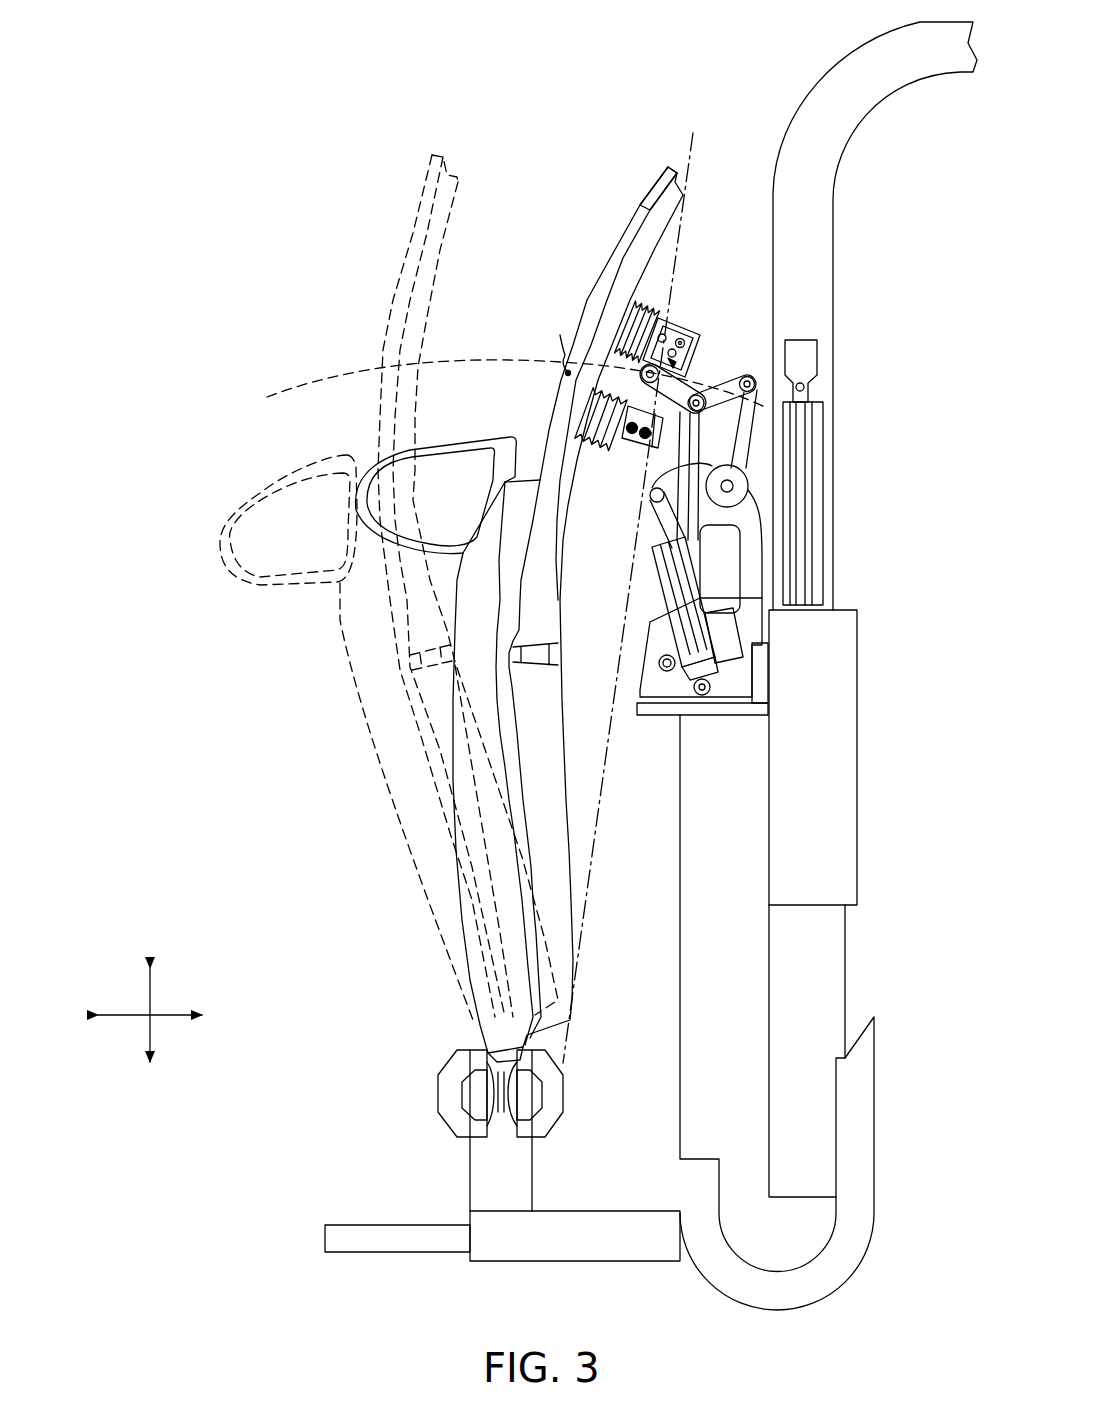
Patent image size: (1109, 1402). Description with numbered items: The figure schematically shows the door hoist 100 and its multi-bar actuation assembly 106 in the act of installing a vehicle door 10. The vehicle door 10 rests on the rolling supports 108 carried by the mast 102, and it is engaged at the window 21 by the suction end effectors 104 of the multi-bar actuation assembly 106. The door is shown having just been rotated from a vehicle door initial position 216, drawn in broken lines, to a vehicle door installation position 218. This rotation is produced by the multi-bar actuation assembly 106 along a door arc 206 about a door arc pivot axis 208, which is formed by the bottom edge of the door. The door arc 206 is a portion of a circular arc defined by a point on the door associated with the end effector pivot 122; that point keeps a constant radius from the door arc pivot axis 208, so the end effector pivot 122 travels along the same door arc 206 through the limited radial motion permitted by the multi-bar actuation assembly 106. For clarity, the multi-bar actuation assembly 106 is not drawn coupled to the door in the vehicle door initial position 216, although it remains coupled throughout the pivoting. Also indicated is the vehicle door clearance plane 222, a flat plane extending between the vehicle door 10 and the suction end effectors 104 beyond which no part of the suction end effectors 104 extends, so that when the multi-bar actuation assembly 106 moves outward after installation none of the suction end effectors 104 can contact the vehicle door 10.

The door hoist 100 is at (288, 143).
The vehicle door 10 is at (500, 190).
The window 21 is at (568, 235).
The mast 102 is at (871, 396).
The suction end effectors 104 is at (682, 300).
The multi-bar actuation assembly 106 is at (745, 255).
The rolling supports 108 is at (367, 1103).
The end effector pivot 122 is at (660, 378).
The door arc 206 is at (352, 376).
The door arc pivot axis 208 is at (447, 1048).
The vehicle door initial position 216 is at (425, 150).
The vehicle door installation position 218 is at (568, 115).
The vehicle door clearance plane 222 is at (700, 133).